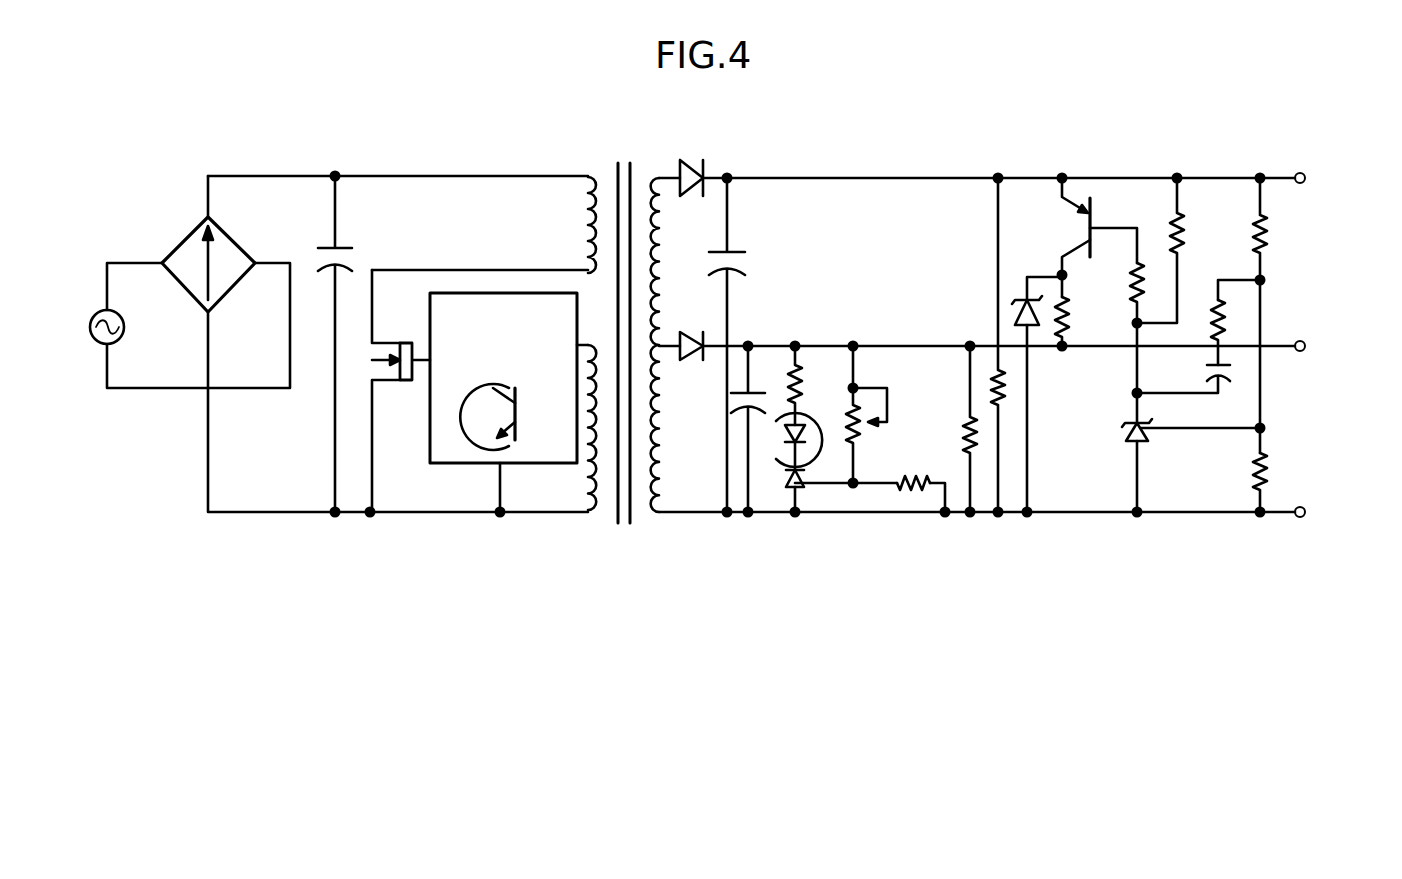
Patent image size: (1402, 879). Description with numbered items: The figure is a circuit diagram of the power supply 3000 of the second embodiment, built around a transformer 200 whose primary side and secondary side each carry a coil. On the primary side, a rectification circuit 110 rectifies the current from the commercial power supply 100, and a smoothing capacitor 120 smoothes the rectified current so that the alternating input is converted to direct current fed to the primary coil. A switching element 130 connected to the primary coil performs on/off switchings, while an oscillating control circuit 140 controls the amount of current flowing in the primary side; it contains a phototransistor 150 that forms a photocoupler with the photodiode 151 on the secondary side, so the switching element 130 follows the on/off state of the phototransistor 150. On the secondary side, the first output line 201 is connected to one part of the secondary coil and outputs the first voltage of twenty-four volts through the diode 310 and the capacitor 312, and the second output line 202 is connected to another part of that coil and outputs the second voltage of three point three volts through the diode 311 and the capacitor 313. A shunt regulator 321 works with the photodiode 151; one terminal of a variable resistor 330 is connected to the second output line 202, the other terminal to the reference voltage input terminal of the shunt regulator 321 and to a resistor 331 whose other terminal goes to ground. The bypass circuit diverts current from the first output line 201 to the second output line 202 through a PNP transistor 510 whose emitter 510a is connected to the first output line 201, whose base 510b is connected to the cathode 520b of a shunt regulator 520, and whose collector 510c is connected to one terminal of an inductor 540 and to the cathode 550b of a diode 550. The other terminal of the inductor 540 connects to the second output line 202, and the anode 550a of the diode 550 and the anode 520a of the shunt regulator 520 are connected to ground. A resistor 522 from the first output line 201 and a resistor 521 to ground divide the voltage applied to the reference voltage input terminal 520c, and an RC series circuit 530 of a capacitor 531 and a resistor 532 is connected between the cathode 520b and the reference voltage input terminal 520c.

The power supply 3000 is at (241, 99).
The commercial power supply 100 is at (123, 332).
The rectification circuit 110 is at (232, 238).
The smoothing capacitor 120 is at (345, 248).
The switching element 130 is at (387, 380).
The oscillating control circuit 140 is at (430, 442).
The phototransistor 150 is at (490, 452).
The photodiode 151 is at (816, 465).
The transformer 200 is at (634, 153).
The first output line 201 is at (818, 178).
The second output line 202 is at (820, 346).
The diode 310 is at (707, 172).
The diode 311 is at (707, 333).
The capacitor 312 is at (735, 250).
The capacitor 313 is at (743, 407).
The shunt regulator 321 is at (786, 499).
The variable resistor 330 is at (901, 397).
The resistor 331 is at (917, 495).
The PNP transistor 510 is at (1115, 194).
The emitter 510a is at (1082, 206).
The base 510b is at (1093, 223).
The collector 510c is at (1083, 243).
The shunt regulator 520 is at (1125, 449).
The anode 520a is at (1145, 440).
The cathode 520b is at (1130, 422).
The reference voltage input terminal 520c is at (1148, 432).
The resistor 521 is at (1277, 470).
The resistor 522 is at (1265, 240).
The RC series circuit 530 is at (1252, 311).
The capacitor 531 is at (1228, 380).
The resistor 532 is at (1224, 333).
The inductor 540 is at (1068, 340).
The diode 550 is at (1020, 308).
The anode 550a is at (1020, 325).
The cathode 550b is at (1023, 300).